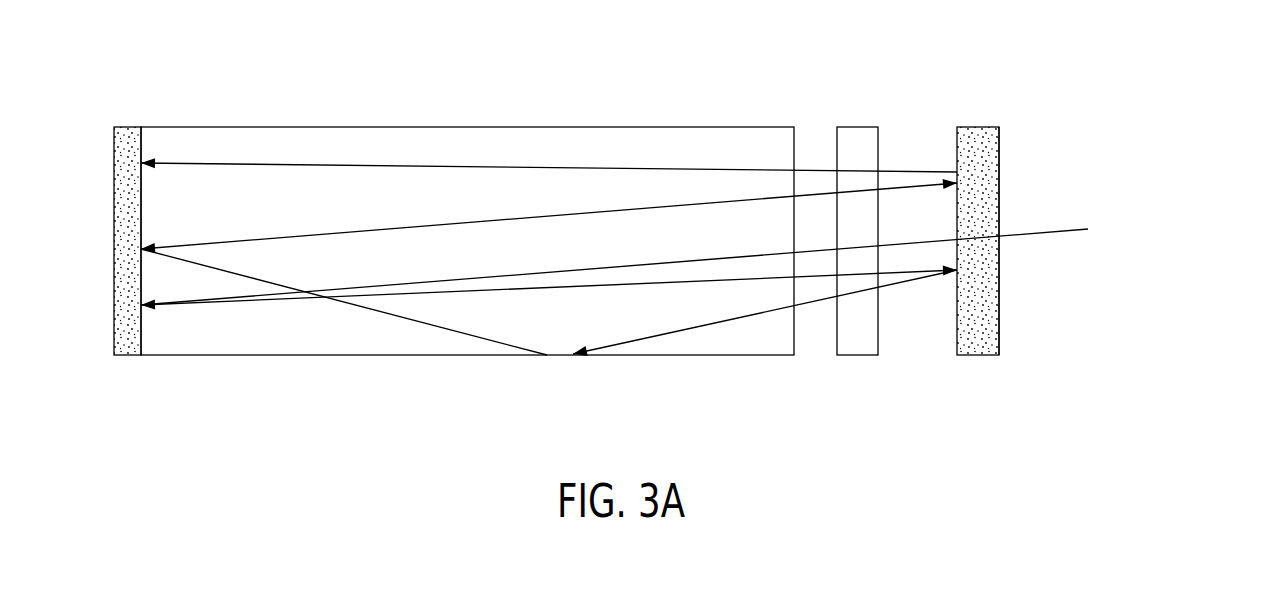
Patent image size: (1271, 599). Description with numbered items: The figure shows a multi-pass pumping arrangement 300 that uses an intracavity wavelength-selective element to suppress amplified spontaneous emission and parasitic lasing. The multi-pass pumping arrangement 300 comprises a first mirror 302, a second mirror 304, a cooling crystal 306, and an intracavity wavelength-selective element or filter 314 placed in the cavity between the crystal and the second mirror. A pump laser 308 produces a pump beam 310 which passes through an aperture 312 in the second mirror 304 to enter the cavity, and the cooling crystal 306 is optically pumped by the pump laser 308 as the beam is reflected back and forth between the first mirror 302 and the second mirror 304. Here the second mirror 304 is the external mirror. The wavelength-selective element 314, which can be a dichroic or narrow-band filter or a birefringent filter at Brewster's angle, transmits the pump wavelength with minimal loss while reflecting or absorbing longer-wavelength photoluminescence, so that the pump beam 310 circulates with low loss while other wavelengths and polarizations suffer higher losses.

The multi-pass pumping arrangement 300 is at (138, 100).
The first mirror 302 is at (112, 192).
The second mirror 304 is at (993, 125).
The cooling crystal 306 is at (375, 125).
The pump laser 308 is at (1190, 233).
The pump beam 310 is at (1050, 230).
The aperture 312 is at (1001, 246).
The wavelength-selective element 314 is at (862, 125).